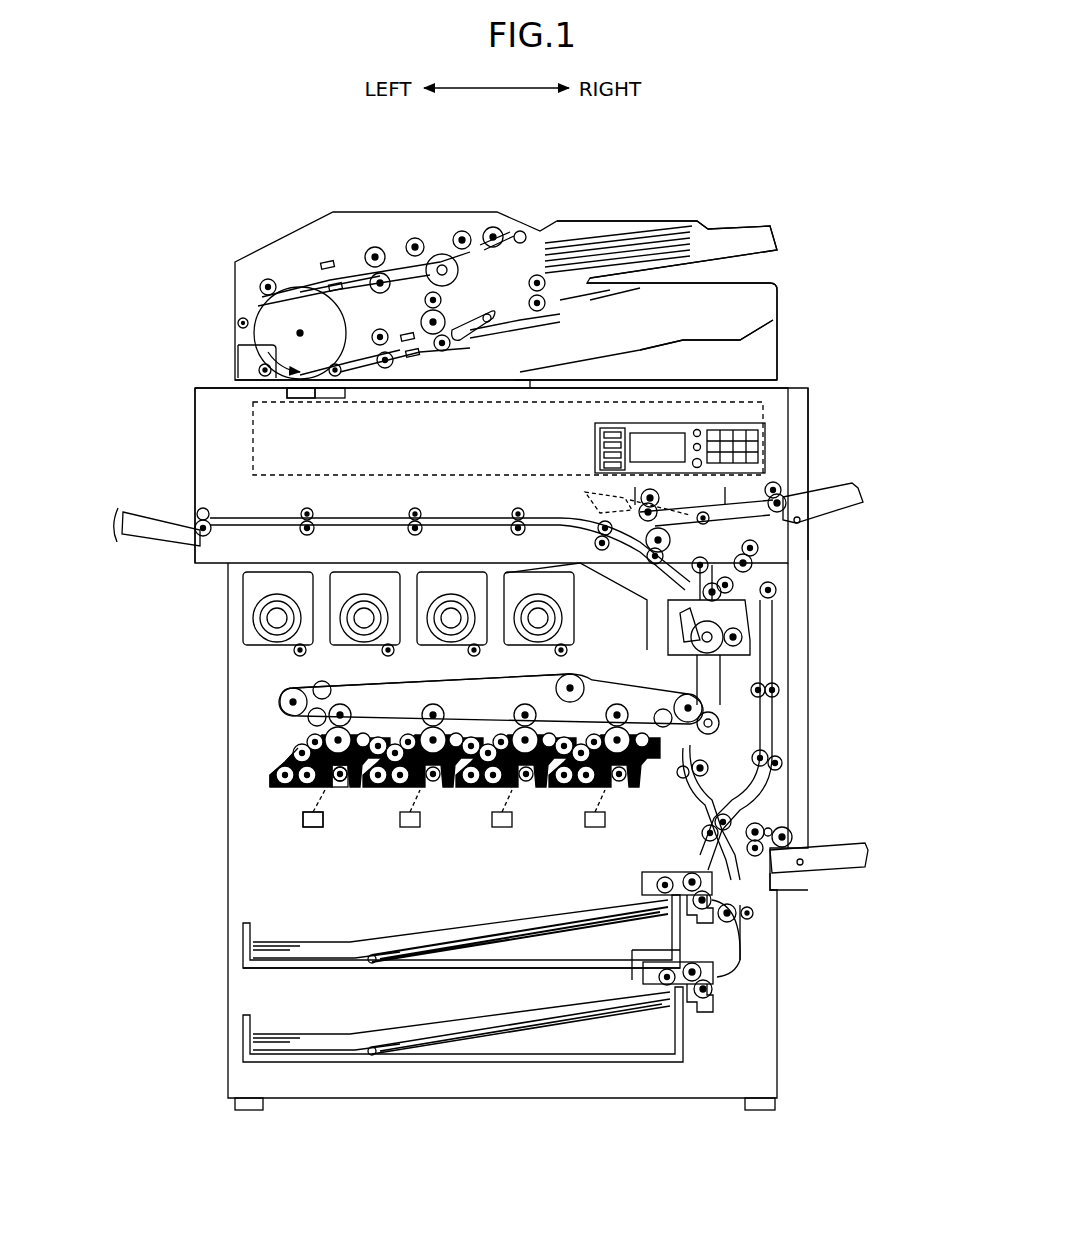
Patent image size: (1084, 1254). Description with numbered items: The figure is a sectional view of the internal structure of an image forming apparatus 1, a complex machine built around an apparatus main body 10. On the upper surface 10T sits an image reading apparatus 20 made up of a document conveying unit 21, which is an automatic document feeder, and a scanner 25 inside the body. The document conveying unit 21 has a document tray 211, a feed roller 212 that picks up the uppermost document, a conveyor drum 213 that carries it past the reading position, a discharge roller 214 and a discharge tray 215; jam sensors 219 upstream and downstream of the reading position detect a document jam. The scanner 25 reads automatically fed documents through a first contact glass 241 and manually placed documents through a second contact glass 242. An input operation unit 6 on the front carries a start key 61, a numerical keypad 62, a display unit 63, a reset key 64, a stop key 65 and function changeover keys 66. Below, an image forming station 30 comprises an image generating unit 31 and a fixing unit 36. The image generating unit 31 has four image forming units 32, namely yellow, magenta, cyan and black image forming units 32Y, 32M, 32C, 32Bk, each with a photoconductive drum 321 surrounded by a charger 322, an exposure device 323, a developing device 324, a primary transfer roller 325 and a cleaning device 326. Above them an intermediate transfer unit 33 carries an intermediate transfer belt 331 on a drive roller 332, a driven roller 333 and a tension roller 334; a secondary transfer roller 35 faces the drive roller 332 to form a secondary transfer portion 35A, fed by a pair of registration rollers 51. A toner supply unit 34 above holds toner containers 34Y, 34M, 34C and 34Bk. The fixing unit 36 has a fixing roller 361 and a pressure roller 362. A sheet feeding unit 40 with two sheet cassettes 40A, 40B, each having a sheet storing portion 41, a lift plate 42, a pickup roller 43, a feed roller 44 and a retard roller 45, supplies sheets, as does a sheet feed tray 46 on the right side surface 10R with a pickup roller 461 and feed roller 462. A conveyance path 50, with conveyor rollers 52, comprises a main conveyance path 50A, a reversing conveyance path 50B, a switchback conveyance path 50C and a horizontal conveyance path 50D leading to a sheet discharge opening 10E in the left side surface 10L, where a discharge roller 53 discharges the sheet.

The image forming apparatus 1 is at (784, 150).
The apparatus main body 10 is at (212, 829).
The upper surface 10T is at (197, 385).
The left side surface 10L is at (192, 452).
The right side surface 10R is at (812, 419).
The sheet discharge opening 10E is at (196, 510).
The discharge roller 53 is at (203, 540).
The image reading apparatus 20 is at (880, 318).
The document conveying unit 21 is at (777, 350).
The scanner 25 is at (758, 413).
The document tray 211 is at (637, 232).
The feed roller 212 is at (498, 238).
The conveyor drum 213 is at (256, 312).
The discharge roller 214 is at (450, 344).
The discharge tray 215 is at (640, 345).
The jam sensors 219 is at (410, 338).
The first contact glass 241 is at (292, 398).
The second contact glass 242 is at (523, 387).
The horizontal conveyance path 50D is at (415, 517).
The input operation unit 6 is at (771, 461).
The function changeover keys 66 is at (586, 466).
The stop key 65 is at (695, 432).
The reset key 64 is at (712, 428).
The numerical keypad 62 is at (762, 440).
The display unit 63 is at (657, 492).
The switchback conveyance path 50C is at (640, 438).
The start key 61 is at (698, 472).
The reversing conveyance path 50B is at (775, 566).
The toner supply unit 34 is at (242, 619).
The yellow toner container 34Y is at (300, 654).
The magenta toner container 34M is at (388, 654).
The cyan toner container 34C is at (474, 654).
The black toner container 34Bk is at (562, 654).
The intermediate transfer unit 33 is at (262, 697).
The intermediate transfer belt 331 is at (440, 678).
The drive roller 332 is at (665, 700).
The driven roller 333 is at (280, 694).
The tension roller 334 is at (586, 690).
The secondary transfer roller 35 is at (720, 723).
The secondary transfer portion 35A is at (680, 739).
The pair of registration rollers 51 is at (683, 780).
The image forming units 32 is at (245, 775).
The yellow image forming unit 32Y is at (298, 846).
The magenta image forming unit 32M is at (376, 846).
The cyan image forming unit 32C is at (468, 838).
The black image forming unit 32Bk is at (568, 818).
The photoconductive drum 321 is at (350, 738).
The charger 322 is at (355, 790).
The exposure device 323 is at (303, 818).
The developing device 324 is at (290, 756).
The primary transfer roller 325 is at (355, 712).
The cleaning device 326 is at (345, 772).
The fixing unit 36 is at (767, 612).
The fixing roller 361 is at (690, 636).
The pressure roller 362 is at (745, 636).
The image forming station 30 is at (880, 568).
The image generating unit 31 is at (695, 682).
The conveyance path 50 is at (710, 748).
The main conveyance path 50A is at (690, 829).
The conveyor rollers 52 is at (766, 808).
The feed roller 462 is at (758, 828).
The pickup roller 461 is at (790, 835).
The sheet feed tray 46 is at (850, 870).
The sheet feeding unit 40 is at (160, 935).
The sheet cassette 40A is at (240, 935).
The sheet cassette 40B is at (240, 1017).
The sheet storing portion 41 is at (400, 968).
The lift plate 42 is at (528, 948).
The pickup roller 43 is at (645, 886).
The feed roller 44 is at (690, 872).
The retard roller 45 is at (703, 922).